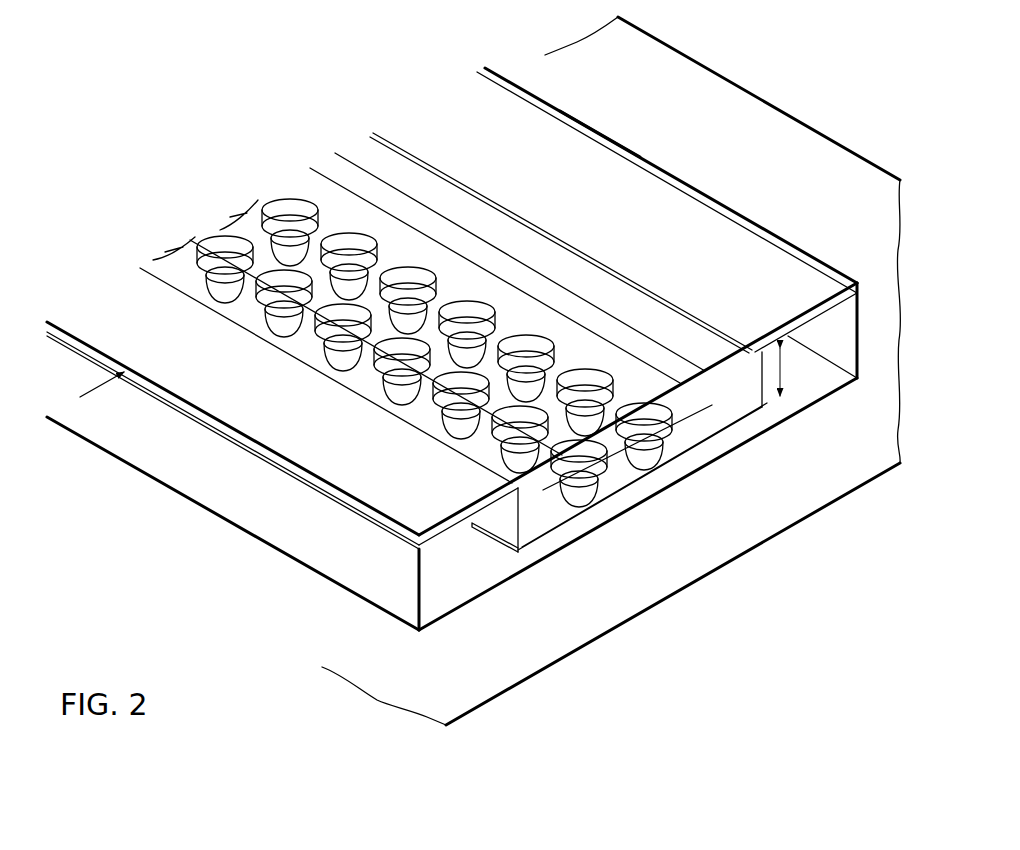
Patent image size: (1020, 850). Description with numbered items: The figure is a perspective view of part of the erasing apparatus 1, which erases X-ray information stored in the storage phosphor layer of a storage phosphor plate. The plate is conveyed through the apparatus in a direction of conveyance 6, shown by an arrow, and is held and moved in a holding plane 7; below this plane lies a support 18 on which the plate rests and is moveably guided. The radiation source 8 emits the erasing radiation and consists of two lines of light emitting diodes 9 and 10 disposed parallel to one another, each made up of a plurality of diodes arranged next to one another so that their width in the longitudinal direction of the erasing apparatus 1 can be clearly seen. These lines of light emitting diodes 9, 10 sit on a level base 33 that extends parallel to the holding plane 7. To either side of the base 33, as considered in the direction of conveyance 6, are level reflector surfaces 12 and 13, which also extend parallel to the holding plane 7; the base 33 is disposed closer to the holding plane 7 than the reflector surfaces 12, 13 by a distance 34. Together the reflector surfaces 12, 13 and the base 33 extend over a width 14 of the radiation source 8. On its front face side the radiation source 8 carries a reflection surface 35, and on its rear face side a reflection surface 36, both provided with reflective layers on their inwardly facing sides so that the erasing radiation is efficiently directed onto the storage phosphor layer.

The erasing apparatus 1 is at (800, 66).
The direction of conveyance 6 is at (576, 723).
The holding plane 7 is at (887, 452).
The radiation source 8 is at (383, 108).
The line of light emitting diodes 9 is at (152, 230).
The line of light emitting diodes 10 is at (239, 189).
The reflector surface 12 is at (455, 532).
The reflector surface 13 is at (860, 313).
The width 14 is at (576, 109).
The support 18 is at (753, 532).
The base 33 is at (547, 517).
The distance 34 is at (799, 386).
The reflection surface 35 is at (283, 537).
The reflection surface 36 is at (707, 222).